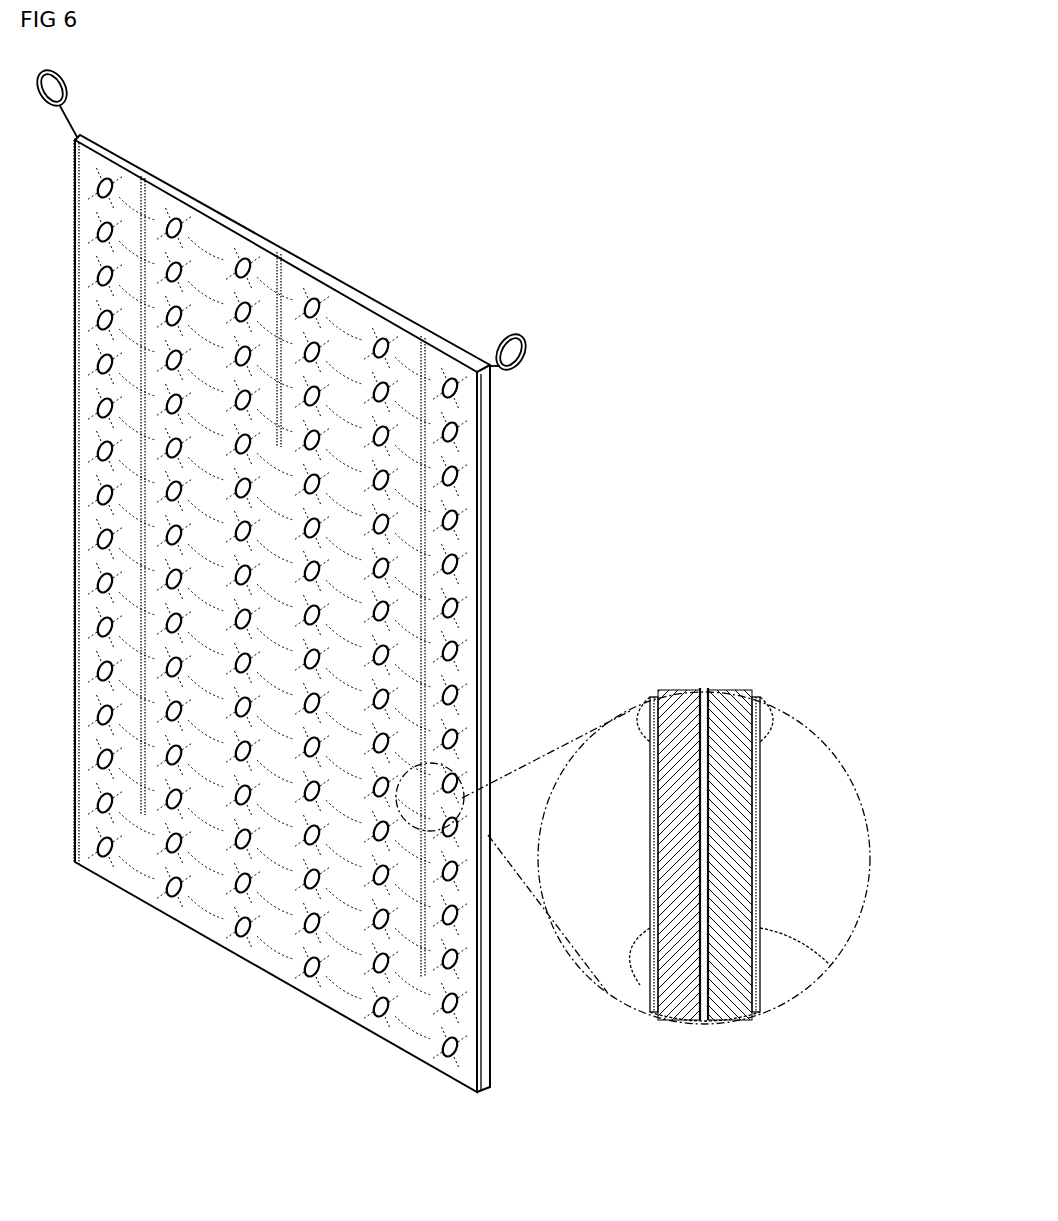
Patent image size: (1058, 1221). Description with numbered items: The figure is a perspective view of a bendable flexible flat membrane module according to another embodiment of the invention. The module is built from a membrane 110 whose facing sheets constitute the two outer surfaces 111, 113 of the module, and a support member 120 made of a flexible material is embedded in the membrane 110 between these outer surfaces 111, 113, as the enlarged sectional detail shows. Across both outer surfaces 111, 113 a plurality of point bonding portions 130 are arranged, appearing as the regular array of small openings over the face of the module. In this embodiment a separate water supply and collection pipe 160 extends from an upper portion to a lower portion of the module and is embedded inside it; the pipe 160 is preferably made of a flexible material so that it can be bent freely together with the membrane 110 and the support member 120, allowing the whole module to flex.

The membrane 110 is at (425, 613).
The outer surface 111 is at (633, 703).
The outer surface 113 is at (742, 825).
The support member 120 is at (651, 935).
The point bonding portion 130 is at (458, 522).
The water supply and collection pipe 160 is at (143, 176).